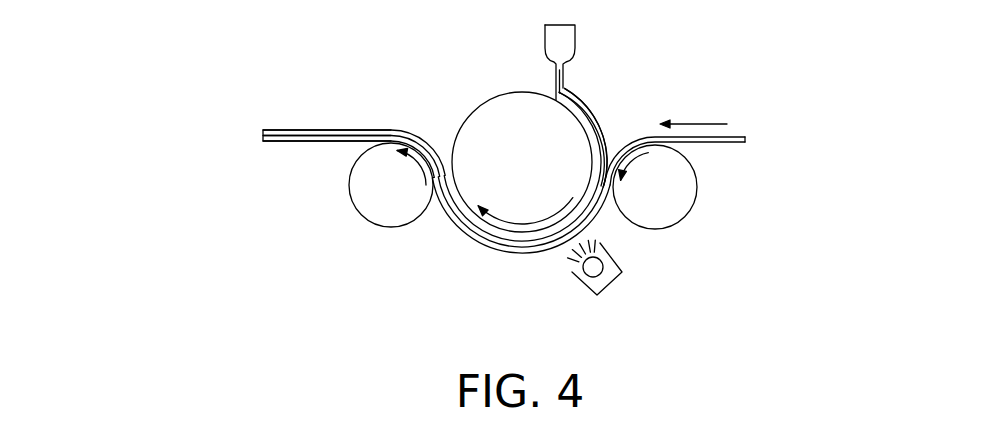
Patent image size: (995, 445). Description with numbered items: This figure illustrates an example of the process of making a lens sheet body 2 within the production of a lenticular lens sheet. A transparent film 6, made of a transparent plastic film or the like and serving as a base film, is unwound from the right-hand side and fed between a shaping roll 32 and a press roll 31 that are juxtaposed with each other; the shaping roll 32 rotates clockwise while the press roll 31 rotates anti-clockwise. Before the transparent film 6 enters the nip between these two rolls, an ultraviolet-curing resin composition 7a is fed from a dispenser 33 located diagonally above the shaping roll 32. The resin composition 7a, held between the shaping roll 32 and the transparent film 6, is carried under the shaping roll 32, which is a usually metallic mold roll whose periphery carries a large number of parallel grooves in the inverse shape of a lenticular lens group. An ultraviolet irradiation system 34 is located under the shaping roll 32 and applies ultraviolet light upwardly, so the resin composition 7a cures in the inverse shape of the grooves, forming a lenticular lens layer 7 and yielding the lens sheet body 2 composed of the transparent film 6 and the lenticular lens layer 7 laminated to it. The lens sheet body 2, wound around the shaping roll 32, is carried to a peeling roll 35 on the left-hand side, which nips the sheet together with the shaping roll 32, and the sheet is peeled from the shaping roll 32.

The lens sheet body 2 is at (218, 82).
The transparent film 6 is at (283, 143).
The lenticular lens layer 7 is at (281, 129).
The ultraviolet-curing resin composition 7a is at (624, 142).
The press roll 31 is at (677, 203).
The shaping roll 32 is at (496, 110).
The dispenser 33 is at (566, 43).
The ultraviolet irradiation system 34 is at (583, 287).
The peeling roll 35 is at (361, 190).